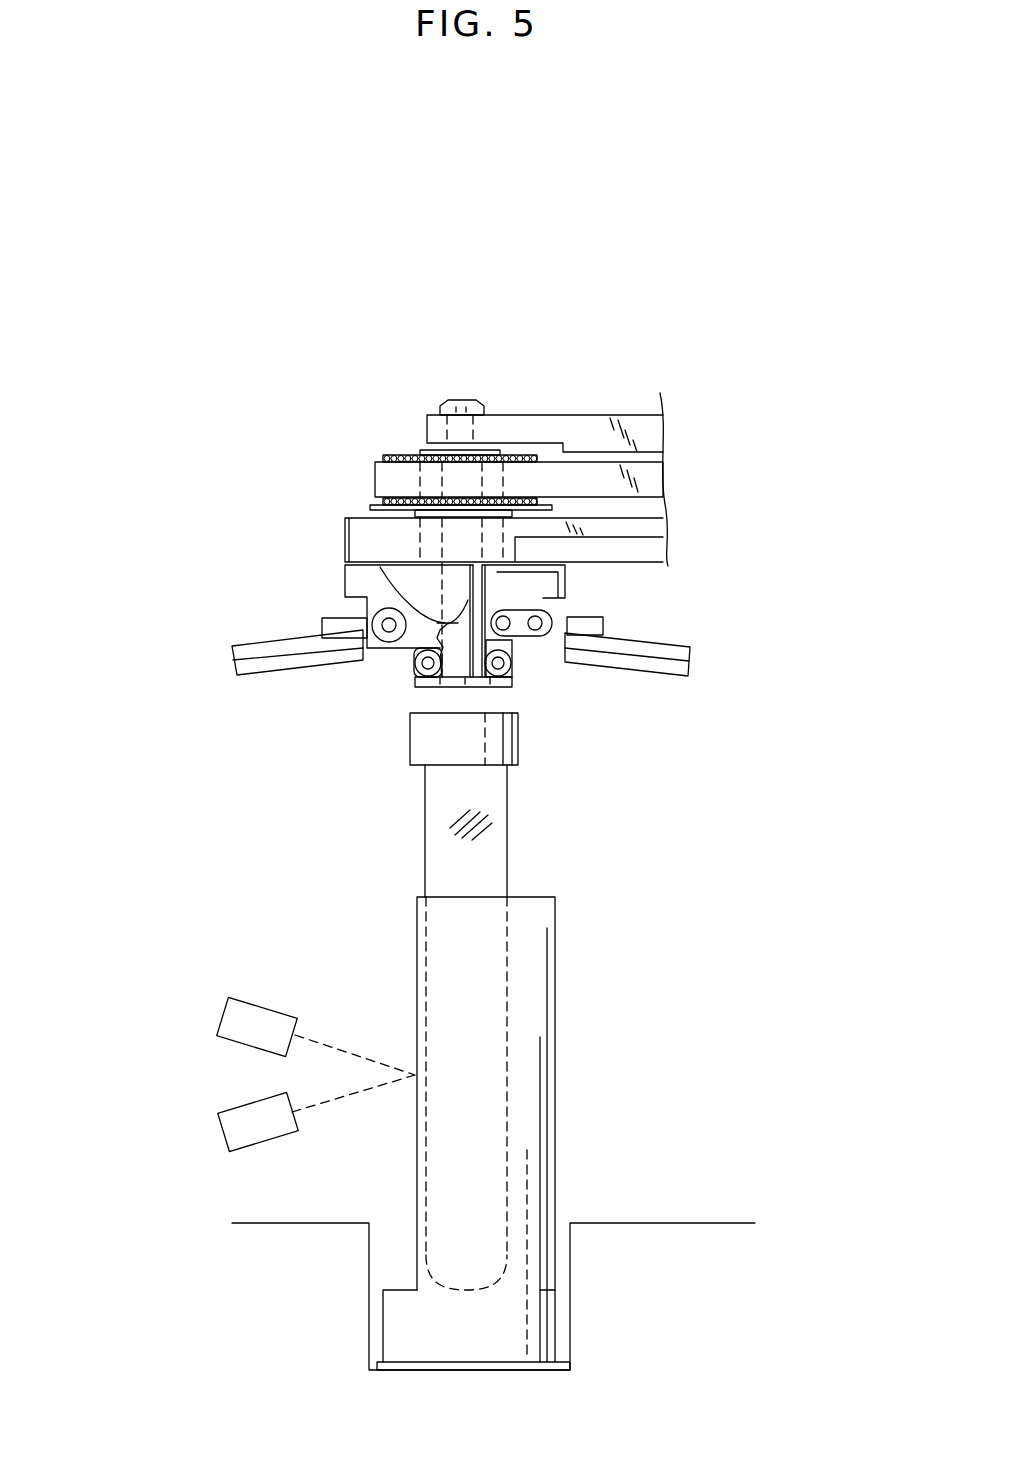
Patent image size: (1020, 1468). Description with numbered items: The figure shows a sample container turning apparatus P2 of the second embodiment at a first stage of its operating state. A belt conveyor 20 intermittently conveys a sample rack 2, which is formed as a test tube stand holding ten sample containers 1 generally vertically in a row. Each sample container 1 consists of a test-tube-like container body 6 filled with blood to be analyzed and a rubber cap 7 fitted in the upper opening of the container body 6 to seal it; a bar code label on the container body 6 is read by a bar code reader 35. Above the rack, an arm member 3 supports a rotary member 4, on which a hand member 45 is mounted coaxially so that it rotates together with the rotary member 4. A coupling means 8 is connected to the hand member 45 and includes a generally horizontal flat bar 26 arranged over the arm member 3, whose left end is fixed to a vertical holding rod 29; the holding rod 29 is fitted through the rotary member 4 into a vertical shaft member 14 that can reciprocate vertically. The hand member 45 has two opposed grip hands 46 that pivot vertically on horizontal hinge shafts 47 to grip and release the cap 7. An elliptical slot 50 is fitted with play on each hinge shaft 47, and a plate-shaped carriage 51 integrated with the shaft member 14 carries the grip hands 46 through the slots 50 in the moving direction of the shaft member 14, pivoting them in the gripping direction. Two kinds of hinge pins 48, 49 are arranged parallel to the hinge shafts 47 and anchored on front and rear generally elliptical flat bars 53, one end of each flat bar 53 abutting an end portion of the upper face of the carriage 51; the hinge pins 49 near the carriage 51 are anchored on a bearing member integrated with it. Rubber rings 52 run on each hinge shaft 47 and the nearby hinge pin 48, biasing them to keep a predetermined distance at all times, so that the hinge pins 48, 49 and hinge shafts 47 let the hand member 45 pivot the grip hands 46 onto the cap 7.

The sample container turning apparatus P2 is at (478, 268).
The sample container 1 is at (545, 872).
The sample rack 2 is at (555, 1073).
The arm member 3 is at (362, 518).
The rotary member 4 is at (345, 585).
The container body 6 is at (425, 840).
The rubber cap 7 is at (410, 748).
The coupling means 8 is at (599, 372).
The shaft member 14 is at (380, 567).
The belt conveyor 20 is at (718, 1237).
The flat bar 26 is at (519, 415).
The holding rod 29 is at (452, 400).
The bar code reader 35 is at (203, 1077).
The hand member 45 is at (226, 632).
The grip hand 46 is at (247, 663).
The hinge shaft 47 is at (372, 622).
The hinge pin 48 is at (497, 612).
The hinge pin 49 is at (416, 673).
The elliptical slot 50 is at (608, 622).
The carriage 51 is at (438, 688).
The rubber ring 52 is at (503, 610).
The elliptical flat bar 53 is at (518, 650).